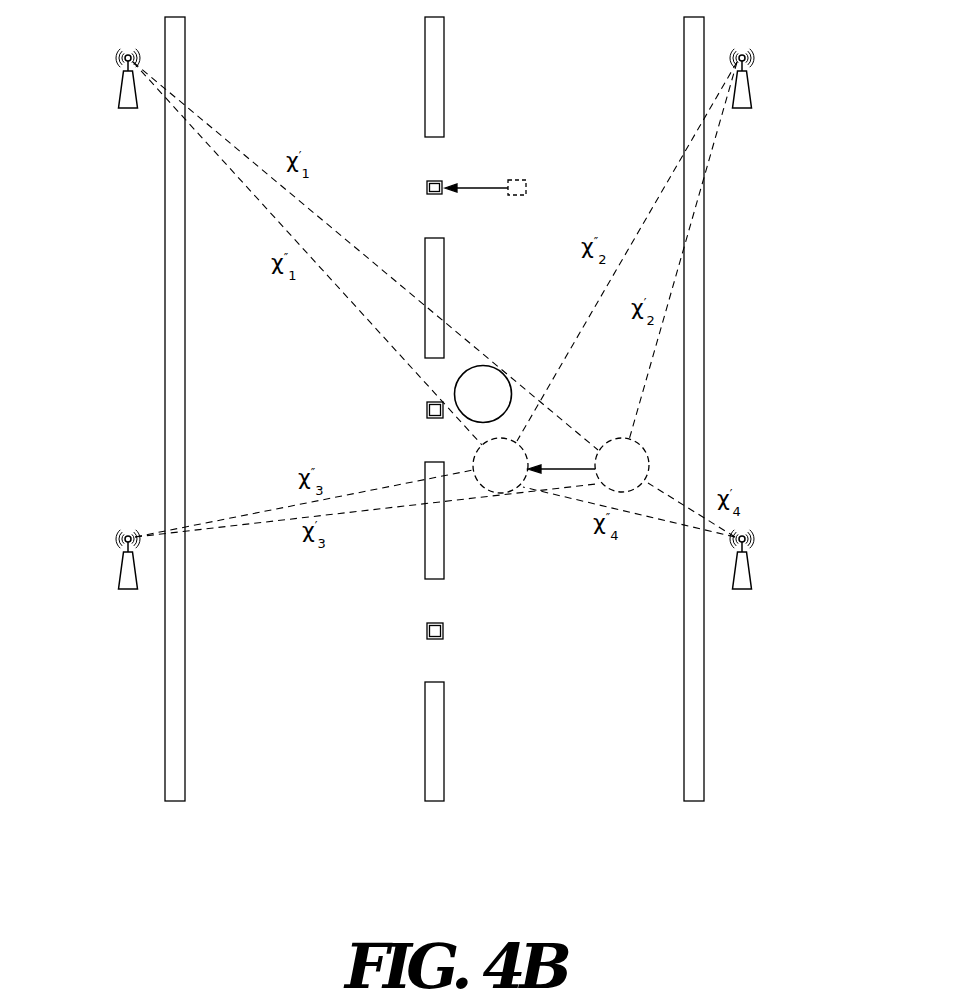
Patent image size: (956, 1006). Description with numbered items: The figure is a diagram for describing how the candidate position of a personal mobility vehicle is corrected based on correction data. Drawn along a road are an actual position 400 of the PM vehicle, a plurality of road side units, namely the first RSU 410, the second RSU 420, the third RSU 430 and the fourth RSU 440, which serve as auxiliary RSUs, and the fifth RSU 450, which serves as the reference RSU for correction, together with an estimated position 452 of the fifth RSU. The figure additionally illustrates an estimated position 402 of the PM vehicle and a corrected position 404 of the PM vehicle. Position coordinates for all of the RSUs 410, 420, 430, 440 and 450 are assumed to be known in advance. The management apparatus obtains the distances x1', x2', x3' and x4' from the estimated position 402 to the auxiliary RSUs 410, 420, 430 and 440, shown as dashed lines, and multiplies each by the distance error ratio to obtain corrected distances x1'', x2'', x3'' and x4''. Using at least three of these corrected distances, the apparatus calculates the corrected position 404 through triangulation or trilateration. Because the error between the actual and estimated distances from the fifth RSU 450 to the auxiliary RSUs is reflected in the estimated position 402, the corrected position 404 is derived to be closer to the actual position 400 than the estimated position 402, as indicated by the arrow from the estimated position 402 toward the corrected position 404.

The actual position of PM vehicle 400 is at (478, 366).
The estimated position of PM vehicle 402 is at (621, 439).
The corrected position of PM vehicle 404 is at (500, 494).
The first RSU 410 is at (120, 100).
The second RSU 420 is at (751, 100).
The third RSU 430 is at (120, 582).
The fourth RSU 440 is at (752, 582).
The fifth RSU 450 is at (427, 184).
The estimated position of fifth RSU 452 is at (527, 188).